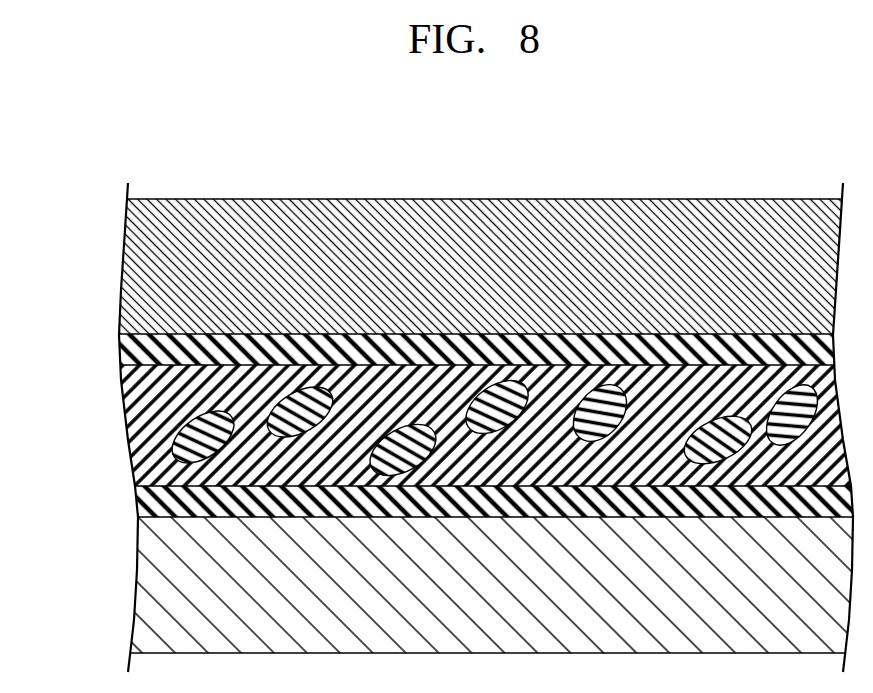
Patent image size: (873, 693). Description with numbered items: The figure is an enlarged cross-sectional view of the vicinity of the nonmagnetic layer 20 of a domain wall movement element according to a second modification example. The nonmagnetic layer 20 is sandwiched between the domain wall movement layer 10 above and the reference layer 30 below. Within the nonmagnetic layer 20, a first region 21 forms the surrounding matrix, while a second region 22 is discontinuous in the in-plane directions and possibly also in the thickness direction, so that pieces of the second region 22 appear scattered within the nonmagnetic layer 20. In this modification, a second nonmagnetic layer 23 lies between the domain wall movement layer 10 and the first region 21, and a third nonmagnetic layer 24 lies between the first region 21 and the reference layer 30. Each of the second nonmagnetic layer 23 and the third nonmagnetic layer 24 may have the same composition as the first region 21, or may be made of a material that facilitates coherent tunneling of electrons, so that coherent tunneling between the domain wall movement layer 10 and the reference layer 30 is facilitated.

The domain wall movement layer 10 is at (148, 267).
The nonmagnetic layer 20 is at (453, 330).
The first region 21 is at (485, 313).
The second region 22 is at (397, 445).
The second nonmagnetic layer 23 is at (148, 354).
The third nonmagnetic layer 24 is at (148, 501).
The reference layer 30 is at (148, 592).